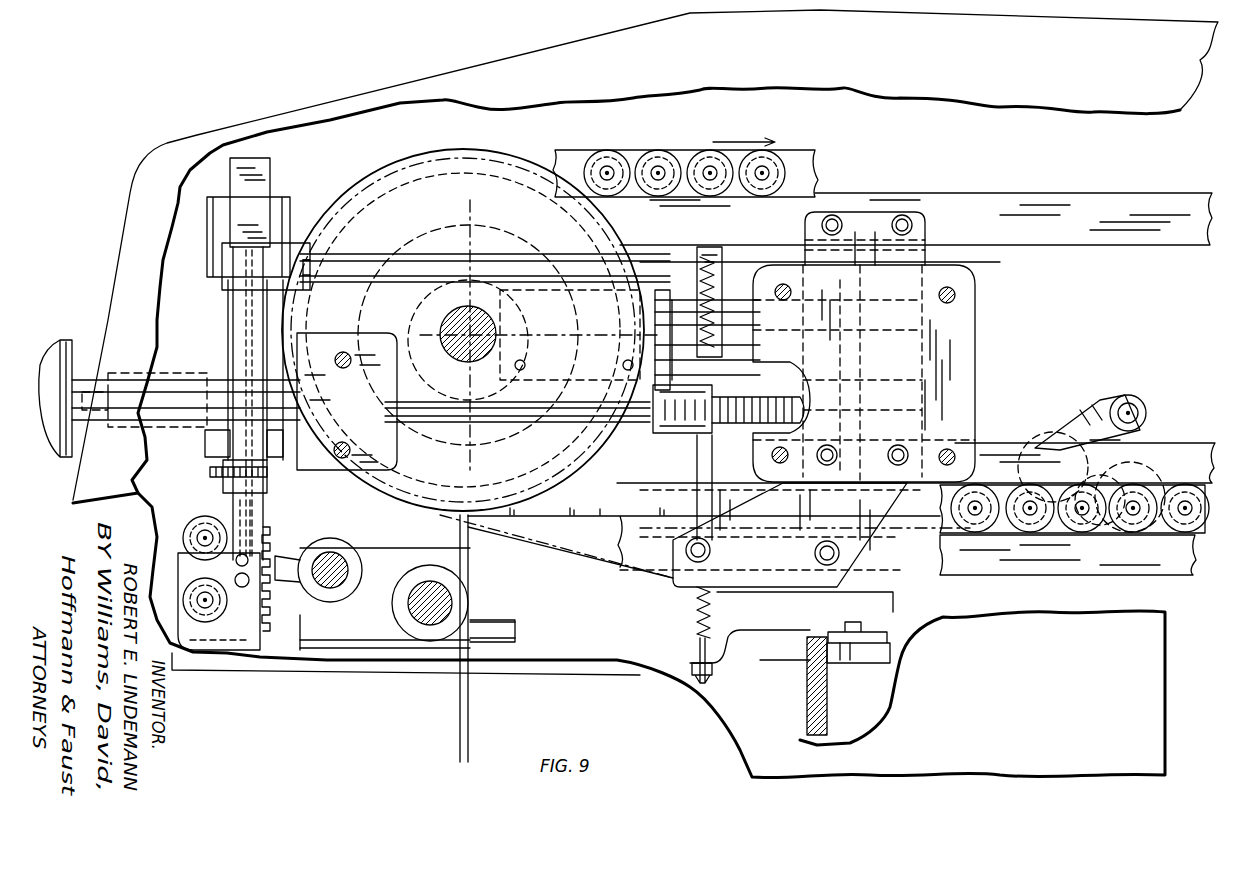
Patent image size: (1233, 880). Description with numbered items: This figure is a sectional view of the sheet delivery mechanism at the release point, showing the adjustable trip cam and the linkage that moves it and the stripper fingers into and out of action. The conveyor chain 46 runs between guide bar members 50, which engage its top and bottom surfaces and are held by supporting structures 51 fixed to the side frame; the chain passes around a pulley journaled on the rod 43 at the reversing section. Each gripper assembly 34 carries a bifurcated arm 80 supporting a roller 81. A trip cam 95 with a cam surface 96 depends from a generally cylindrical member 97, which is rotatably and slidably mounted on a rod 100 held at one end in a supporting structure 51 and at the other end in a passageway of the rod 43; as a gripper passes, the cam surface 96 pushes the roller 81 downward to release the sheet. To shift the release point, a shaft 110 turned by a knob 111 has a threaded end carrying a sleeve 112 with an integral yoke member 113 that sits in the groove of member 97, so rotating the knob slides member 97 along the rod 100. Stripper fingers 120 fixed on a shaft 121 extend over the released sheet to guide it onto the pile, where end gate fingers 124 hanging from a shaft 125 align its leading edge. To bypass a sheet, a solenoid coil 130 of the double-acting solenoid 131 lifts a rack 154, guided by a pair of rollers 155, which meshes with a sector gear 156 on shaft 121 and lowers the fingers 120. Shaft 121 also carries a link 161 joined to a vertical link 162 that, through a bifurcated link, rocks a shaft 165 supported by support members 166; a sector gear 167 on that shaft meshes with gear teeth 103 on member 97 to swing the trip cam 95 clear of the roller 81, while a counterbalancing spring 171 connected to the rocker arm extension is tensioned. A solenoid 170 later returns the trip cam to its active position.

The gripper assembly 34 is at (1098, 410).
The rod 43 is at (445, 325).
The chain 46 is at (810, 175).
The bar member 50 is at (1098, 200).
The supporting structure 51 is at (975, 282).
The bifurcated arm 80 is at (1072, 435).
The roller 81 is at (1143, 408).
The trip cam 95 is at (490, 418).
The cam surface 96 is at (545, 410).
The cylindrical member 97 is at (535, 275).
The rod 100 is at (590, 338).
The gear teeth 103 is at (800, 405).
The shaft 110 is at (408, 410).
The knob 111 is at (52, 375).
The sleeve 112 is at (665, 432).
The yoke member 113 is at (622, 368).
The stripper fingers 120 is at (553, 515).
The shaft 121 is at (330, 602).
The end gate fingers 124 is at (460, 722).
The shaft 125 is at (405, 615).
The solenoid coil 130 is at (296, 205).
The double-acting solenoid 131 is at (222, 338).
The rack 154 is at (240, 652).
The rollers 155 is at (183, 540).
The sector gear 156 is at (298, 563).
The link 161 is at (266, 640).
The link 162 is at (262, 500).
The shaft 165 is at (380, 262).
The support members 166 is at (300, 330).
The sector gear 167 is at (725, 310).
The solenoid 170 is at (210, 447).
The counterbalancing spring 171 is at (695, 268).